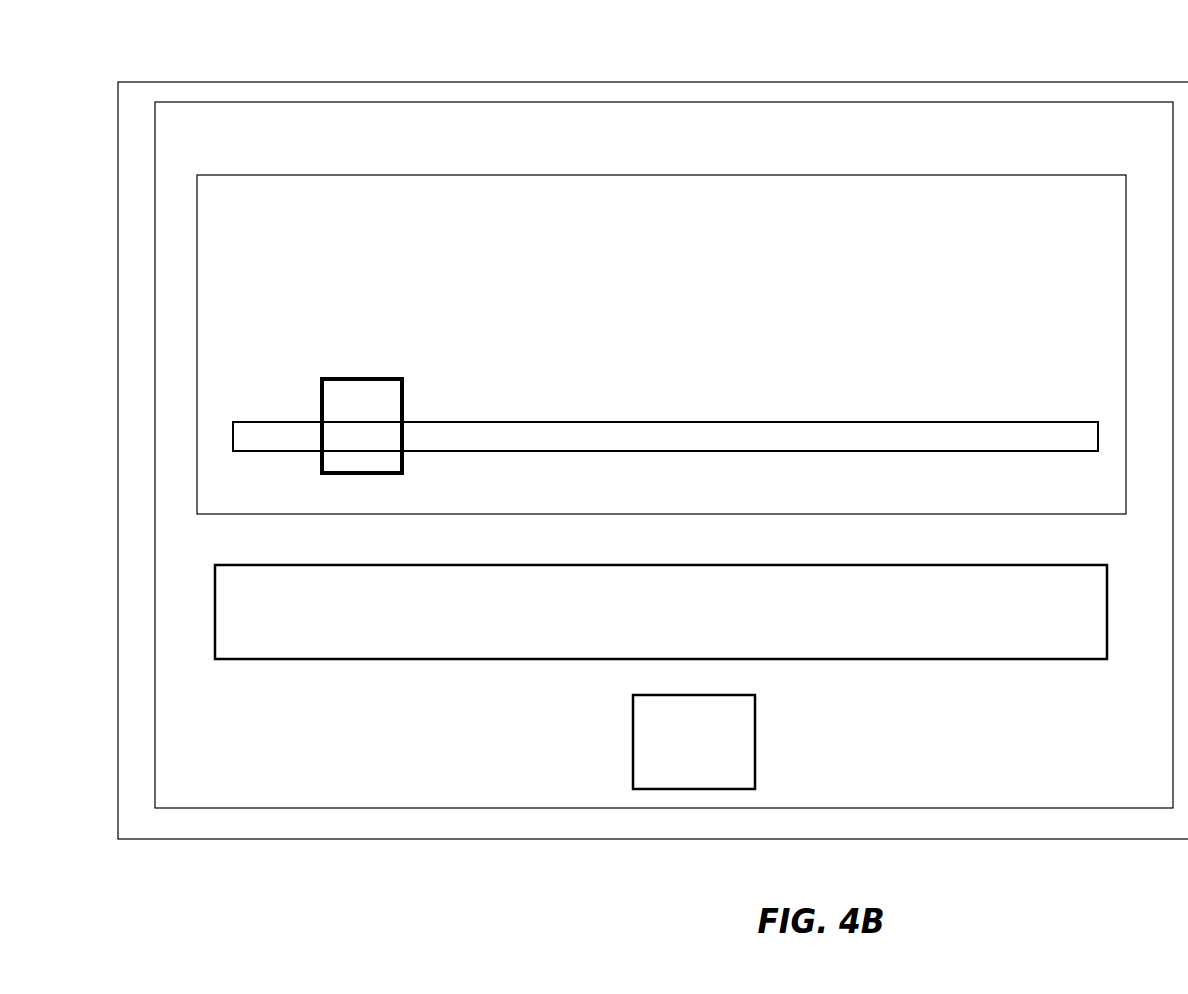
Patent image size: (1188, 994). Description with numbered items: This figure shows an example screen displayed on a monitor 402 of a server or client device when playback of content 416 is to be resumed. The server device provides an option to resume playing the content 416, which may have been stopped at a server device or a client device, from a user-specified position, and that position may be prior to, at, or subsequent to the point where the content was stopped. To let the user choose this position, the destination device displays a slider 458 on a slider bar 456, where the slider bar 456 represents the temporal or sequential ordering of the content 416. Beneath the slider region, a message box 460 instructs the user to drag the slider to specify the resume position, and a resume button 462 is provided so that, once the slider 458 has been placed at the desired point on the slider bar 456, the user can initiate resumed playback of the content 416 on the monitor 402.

The monitor 402 is at (757, 82).
The content 416 is at (805, 175).
The slider bar 456 is at (853, 422).
The slider 458 is at (342, 452).
The instruction message 460 is at (642, 637).
The resume button 462 is at (674, 768).